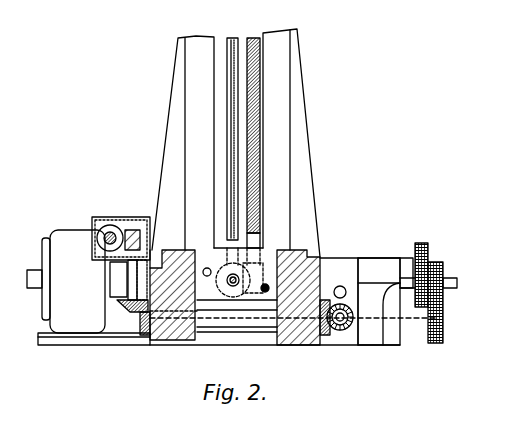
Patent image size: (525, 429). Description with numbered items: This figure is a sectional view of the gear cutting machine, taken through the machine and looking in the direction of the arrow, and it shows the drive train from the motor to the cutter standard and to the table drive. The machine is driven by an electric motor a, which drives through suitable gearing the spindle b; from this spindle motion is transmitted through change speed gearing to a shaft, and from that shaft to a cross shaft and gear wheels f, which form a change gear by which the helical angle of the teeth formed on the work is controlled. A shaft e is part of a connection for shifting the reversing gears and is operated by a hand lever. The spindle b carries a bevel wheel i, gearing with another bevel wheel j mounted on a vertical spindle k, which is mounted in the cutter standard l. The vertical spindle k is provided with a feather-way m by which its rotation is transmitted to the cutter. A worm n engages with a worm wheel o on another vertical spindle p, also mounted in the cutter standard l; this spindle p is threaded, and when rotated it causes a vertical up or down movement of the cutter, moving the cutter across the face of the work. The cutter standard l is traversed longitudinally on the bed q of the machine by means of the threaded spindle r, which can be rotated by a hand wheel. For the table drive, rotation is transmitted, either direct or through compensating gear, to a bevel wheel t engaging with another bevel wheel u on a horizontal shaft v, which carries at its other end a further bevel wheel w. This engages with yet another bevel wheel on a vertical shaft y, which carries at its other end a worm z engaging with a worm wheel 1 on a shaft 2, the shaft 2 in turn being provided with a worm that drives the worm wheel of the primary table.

The electric motor a is at (63, 237).
The worm wheel 1 is at (112, 223).
The shaft 2 is at (108, 240).
The worm z is at (135, 237).
The vertical shaft y is at (130, 282).
The bevel wheel w is at (147, 335).
The bed q is at (165, 333).
The cutter standard l is at (168, 138).
The vertical spindle k is at (235, 178).
The feather-way m is at (229, 38).
The vertical spindle p is at (258, 202).
The worm wheel o is at (293, 315).
The threaded spindle r is at (207, 277).
The spindle b is at (234, 286).
The bevel wheel i is at (256, 273).
The bevel wheel j is at (222, 257).
The horizontal shaft v is at (267, 317).
The worm n is at (318, 258).
The shaft e is at (378, 320).
The bevel wheel t is at (343, 330).
The bevel wheel u is at (325, 330).
The gear wheels f is at (443, 312).